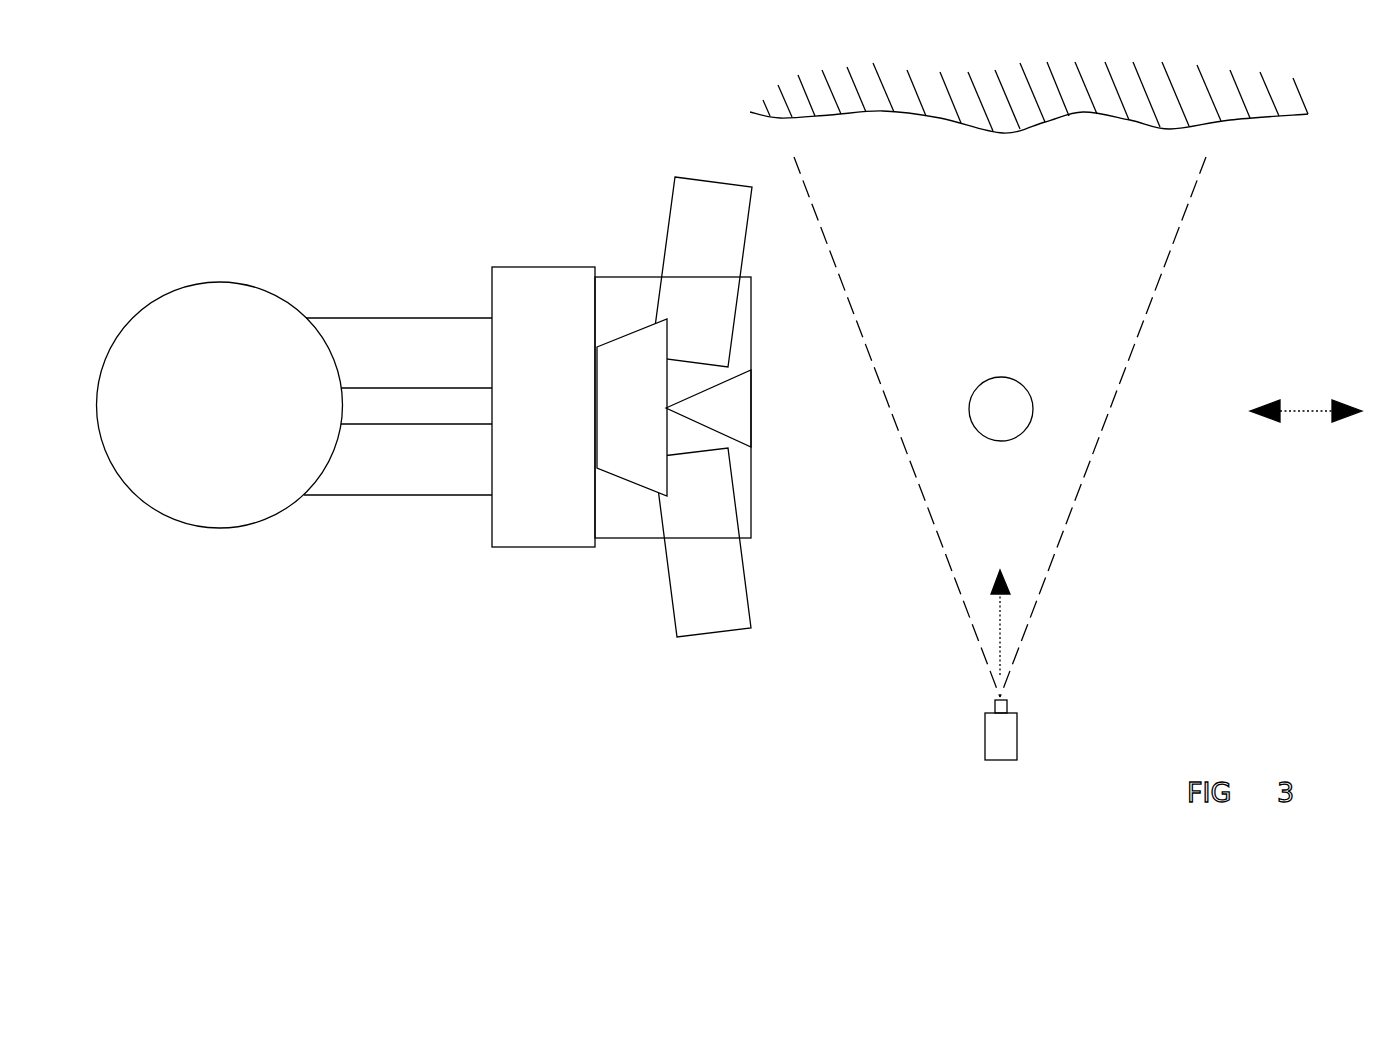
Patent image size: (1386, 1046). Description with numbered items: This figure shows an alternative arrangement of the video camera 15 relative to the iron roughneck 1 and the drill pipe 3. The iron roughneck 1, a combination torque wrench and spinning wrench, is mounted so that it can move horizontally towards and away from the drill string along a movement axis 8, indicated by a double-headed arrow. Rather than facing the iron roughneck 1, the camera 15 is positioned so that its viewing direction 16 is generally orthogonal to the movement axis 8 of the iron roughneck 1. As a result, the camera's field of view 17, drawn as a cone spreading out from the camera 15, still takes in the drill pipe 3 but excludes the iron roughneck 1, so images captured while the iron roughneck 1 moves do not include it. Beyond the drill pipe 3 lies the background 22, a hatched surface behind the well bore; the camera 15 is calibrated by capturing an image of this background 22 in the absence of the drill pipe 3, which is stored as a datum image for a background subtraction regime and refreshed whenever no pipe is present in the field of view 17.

The iron roughneck 1 is at (390, 262).
The drill pipe 3 is at (1018, 420).
The movement axis 8 is at (1312, 411).
The camera 15 is at (1010, 740).
The viewing direction 16 is at (1002, 626).
The field of view 17 is at (1172, 247).
The background 22 is at (1257, 120).